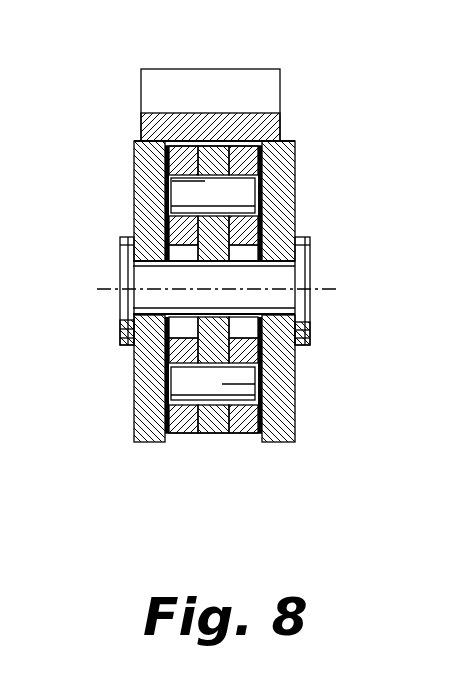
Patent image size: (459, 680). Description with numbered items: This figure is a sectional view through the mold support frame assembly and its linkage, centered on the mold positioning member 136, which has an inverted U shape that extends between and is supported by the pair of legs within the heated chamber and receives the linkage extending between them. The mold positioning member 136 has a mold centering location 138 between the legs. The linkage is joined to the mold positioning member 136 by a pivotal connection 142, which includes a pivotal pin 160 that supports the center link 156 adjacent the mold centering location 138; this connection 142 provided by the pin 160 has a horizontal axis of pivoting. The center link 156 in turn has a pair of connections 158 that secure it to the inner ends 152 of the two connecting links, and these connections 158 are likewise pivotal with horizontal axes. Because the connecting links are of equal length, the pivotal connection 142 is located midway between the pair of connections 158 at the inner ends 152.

The mold positioning member 136 is at (285, 140).
The mold centering location 138 is at (242, 82).
The pivotal connection 142 is at (310, 268).
The inner end 152 is at (232, 143).
The center link 156 is at (225, 238).
The connection 158 is at (177, 167).
The pivotal pin 160 is at (299, 323).